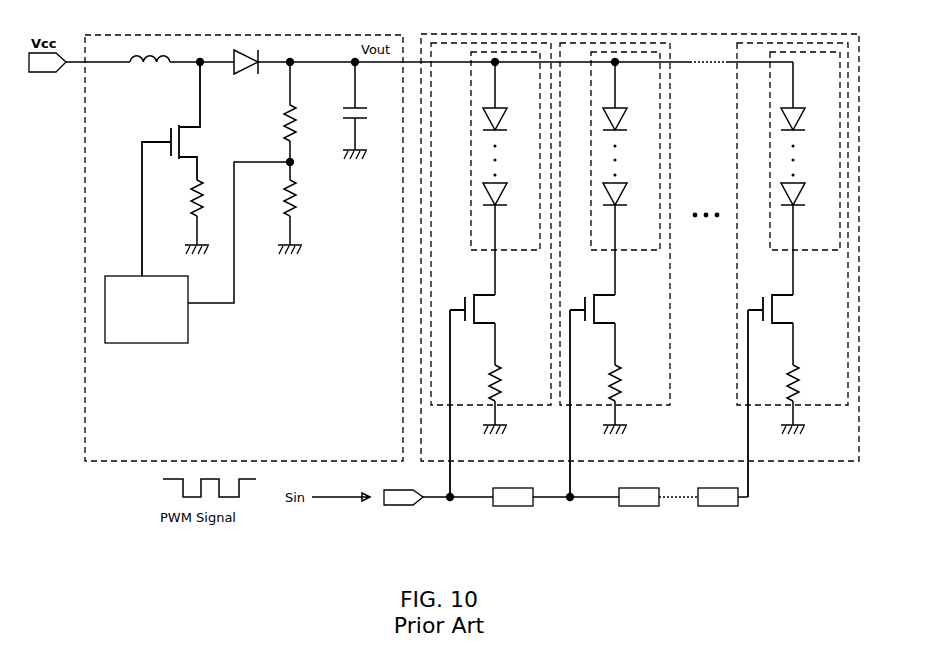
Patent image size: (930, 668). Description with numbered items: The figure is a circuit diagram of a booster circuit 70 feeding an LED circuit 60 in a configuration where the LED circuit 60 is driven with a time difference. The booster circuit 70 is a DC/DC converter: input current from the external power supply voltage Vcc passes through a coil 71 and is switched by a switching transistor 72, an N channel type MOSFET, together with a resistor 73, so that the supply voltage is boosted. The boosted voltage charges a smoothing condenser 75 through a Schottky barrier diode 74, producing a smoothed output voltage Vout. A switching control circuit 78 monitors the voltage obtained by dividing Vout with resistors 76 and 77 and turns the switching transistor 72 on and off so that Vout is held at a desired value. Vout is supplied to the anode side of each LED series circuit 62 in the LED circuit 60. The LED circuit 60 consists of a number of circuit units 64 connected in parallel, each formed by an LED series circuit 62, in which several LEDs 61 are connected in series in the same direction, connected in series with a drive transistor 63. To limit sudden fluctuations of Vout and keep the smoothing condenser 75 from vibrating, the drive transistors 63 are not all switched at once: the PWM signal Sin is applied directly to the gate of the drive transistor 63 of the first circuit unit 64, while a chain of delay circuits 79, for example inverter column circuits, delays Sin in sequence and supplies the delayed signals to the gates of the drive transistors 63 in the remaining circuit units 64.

The LED circuit 60 is at (750, 36).
The LED 61 is at (812, 220).
The LED series circuit 62 is at (802, 277).
The drive transistor 63 is at (821, 315).
The circuit unit 64 is at (832, 430).
The booster circuit 70 is at (320, 36).
The coil 71 is at (149, 76).
The switching transistor 72 is at (202, 147).
The resistor 73 is at (183, 196).
The Schottky barrier diode 74 is at (246, 76).
The smoothing condenser 75 is at (368, 116).
The resistor 76 is at (302, 126).
The resistor 77 is at (276, 196).
The switching control circuit 78 is at (121, 274).
The delay circuit 79 is at (713, 532).